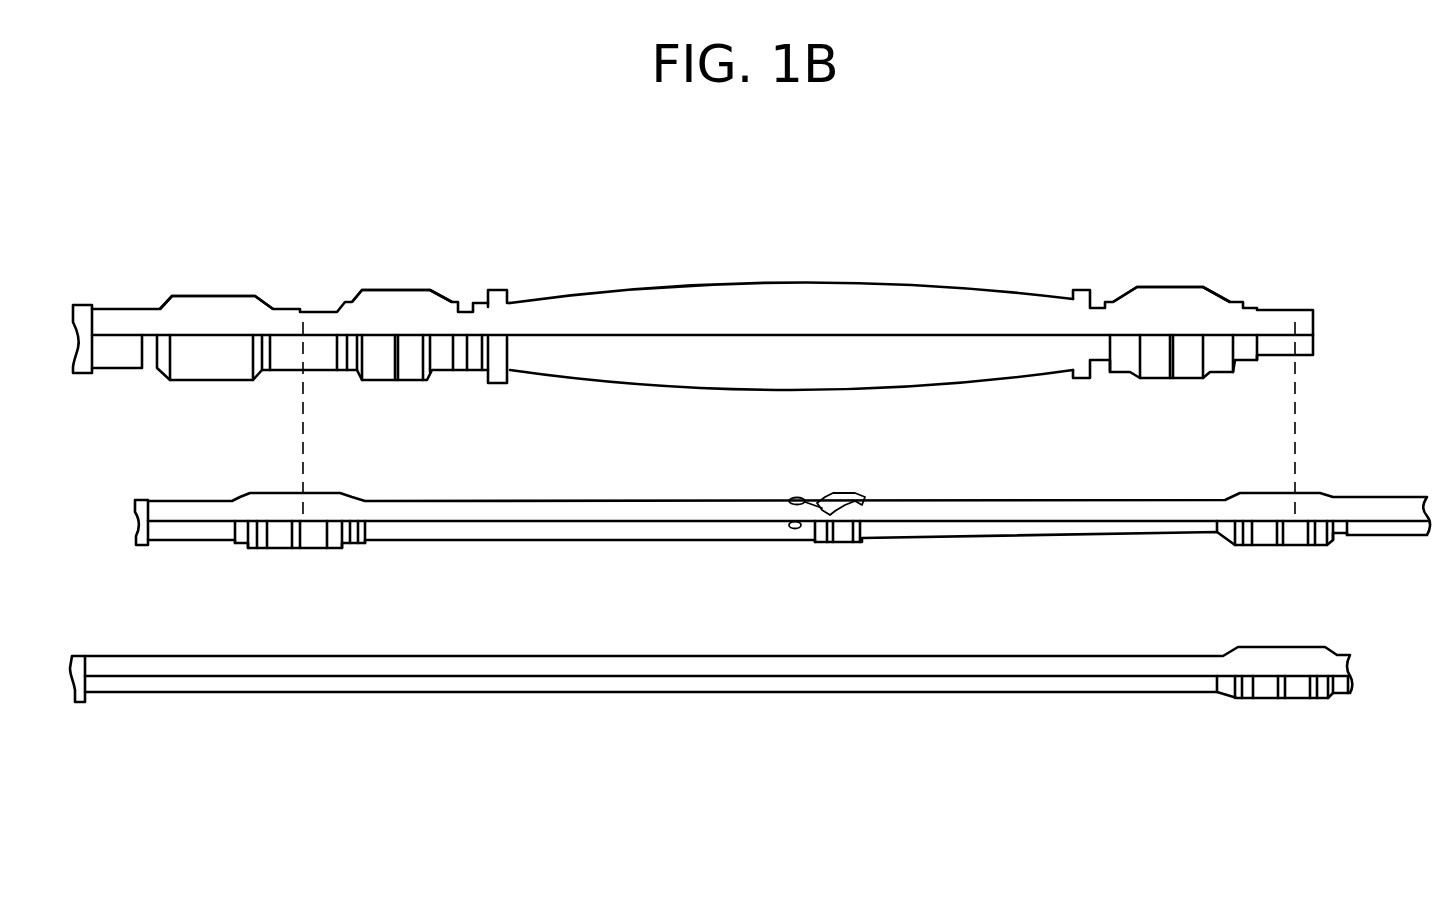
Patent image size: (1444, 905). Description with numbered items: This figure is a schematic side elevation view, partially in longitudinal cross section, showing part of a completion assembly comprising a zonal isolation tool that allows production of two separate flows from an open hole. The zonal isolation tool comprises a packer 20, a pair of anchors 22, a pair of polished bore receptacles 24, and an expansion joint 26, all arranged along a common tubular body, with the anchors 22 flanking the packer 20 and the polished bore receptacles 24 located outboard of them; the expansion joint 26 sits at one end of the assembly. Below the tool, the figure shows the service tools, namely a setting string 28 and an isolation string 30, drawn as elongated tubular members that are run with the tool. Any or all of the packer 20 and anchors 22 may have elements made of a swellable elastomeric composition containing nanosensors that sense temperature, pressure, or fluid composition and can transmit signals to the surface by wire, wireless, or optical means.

The packer 20 is at (790, 283).
The anchors 22 is at (410, 290).
The polished bore receptacles 24 is at (303, 307).
The expansion joint 26 is at (208, 297).
The setting string 28 is at (667, 538).
The isolation string 30 is at (698, 677).